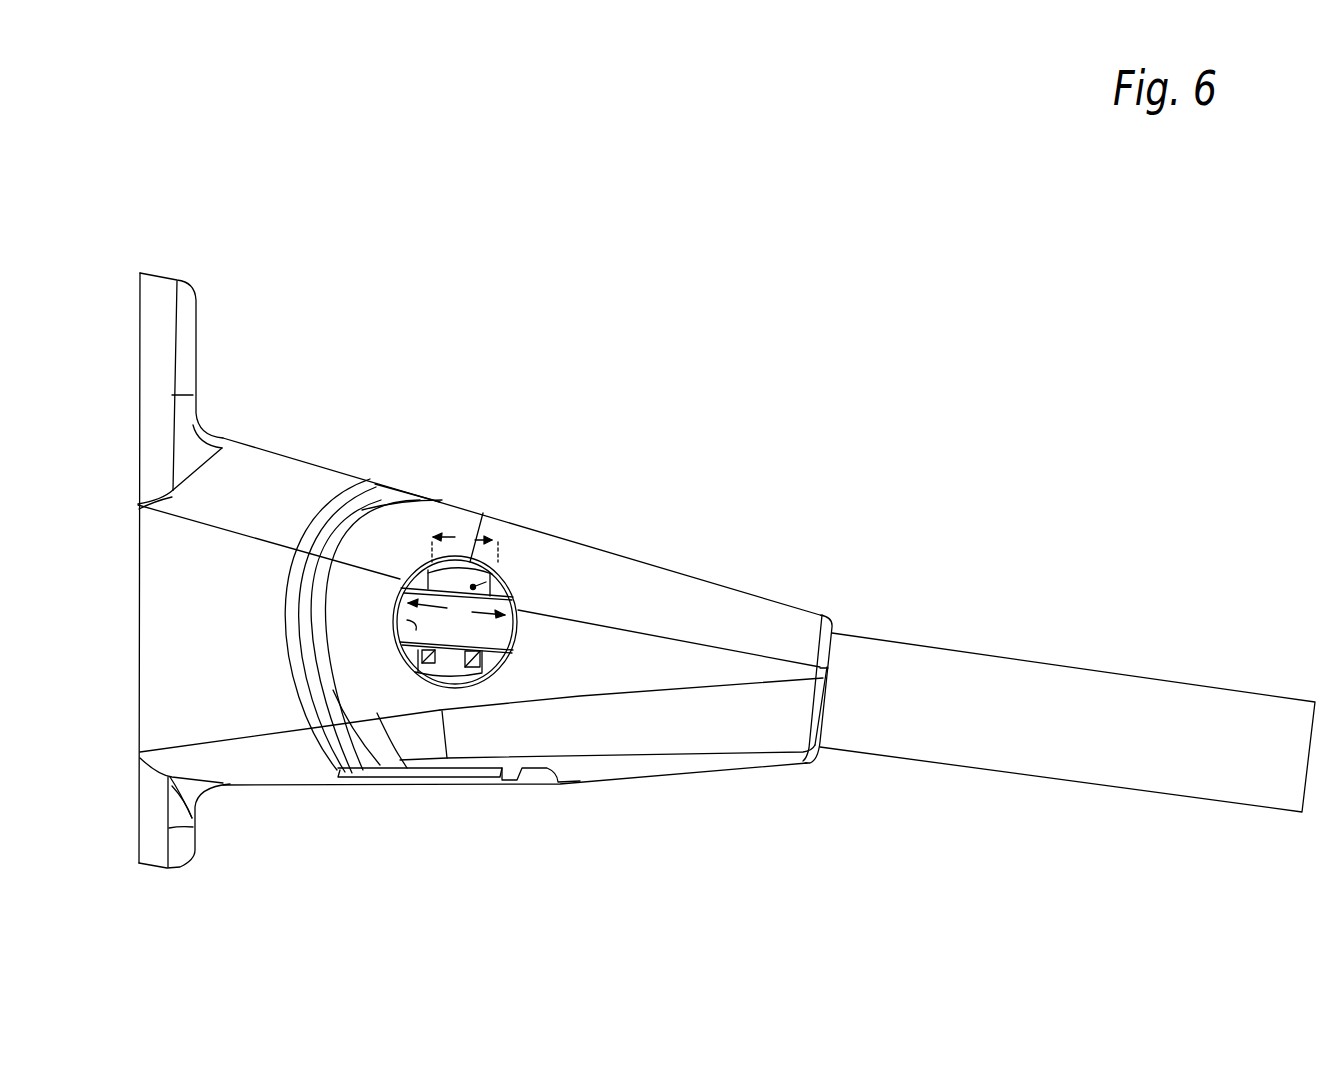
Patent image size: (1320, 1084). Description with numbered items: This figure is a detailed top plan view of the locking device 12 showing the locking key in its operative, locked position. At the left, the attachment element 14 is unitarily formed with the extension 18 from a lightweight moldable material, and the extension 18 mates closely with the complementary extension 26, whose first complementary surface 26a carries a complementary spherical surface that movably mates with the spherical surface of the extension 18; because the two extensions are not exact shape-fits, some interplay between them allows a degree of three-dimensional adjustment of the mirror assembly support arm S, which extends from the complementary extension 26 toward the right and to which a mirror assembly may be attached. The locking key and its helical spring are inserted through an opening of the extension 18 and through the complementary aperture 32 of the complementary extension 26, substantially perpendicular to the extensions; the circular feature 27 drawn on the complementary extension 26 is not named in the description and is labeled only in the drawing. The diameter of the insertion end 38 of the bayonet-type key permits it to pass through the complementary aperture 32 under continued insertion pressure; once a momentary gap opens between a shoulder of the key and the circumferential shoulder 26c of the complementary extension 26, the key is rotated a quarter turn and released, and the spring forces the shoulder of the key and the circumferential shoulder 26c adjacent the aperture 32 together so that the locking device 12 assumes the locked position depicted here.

The locking device 12 is at (780, 312).
The attachment element 14 is at (153, 322).
The extension 18 is at (210, 679).
The complementary extension 26 is at (700, 575).
The first complementary surface 26a is at (654, 625).
The circumferential shoulder 26c is at (418, 572).
The bore 27 is at (505, 583).
The complementary aperture 32 is at (512, 593).
The insertion end 38 is at (398, 620).
The support arm S is at (1196, 766).